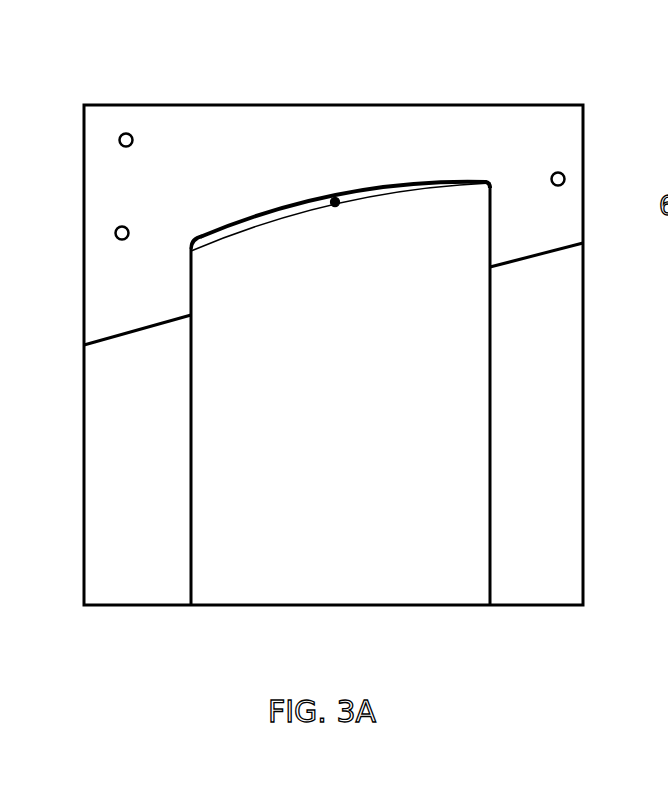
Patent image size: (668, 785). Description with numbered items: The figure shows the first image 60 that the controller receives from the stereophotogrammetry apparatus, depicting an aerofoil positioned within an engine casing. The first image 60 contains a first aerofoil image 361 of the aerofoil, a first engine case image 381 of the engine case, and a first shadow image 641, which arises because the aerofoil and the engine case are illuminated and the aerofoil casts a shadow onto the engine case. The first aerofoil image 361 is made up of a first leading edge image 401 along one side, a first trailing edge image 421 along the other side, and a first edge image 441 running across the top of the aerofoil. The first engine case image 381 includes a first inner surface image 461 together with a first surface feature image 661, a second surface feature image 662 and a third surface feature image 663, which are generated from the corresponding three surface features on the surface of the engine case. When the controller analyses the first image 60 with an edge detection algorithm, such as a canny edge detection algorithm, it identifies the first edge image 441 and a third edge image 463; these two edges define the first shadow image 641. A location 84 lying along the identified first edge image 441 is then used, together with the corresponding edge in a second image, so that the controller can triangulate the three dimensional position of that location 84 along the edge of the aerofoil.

The first image 60 is at (149, 618).
The location 84 is at (337, 205).
The first aerofoil image 361 is at (333, 575).
The first engine case image 381 is at (222, 127).
The first leading edge image 401 is at (191, 455).
The first trailing edge image 421 is at (492, 363).
The first edge image 441 is at (268, 222).
The first inner surface image 461 is at (360, 160).
The third edge image 463 is at (415, 178).
The first shadow image 641 is at (215, 231).
The first surface feature image 661 is at (126, 133).
The second surface feature image 662 is at (115, 233).
The third surface feature image 663 is at (565, 178).